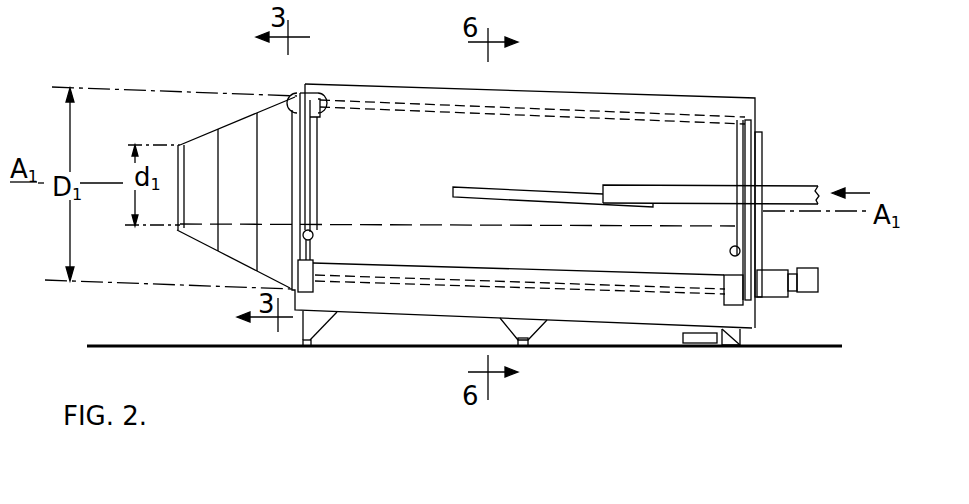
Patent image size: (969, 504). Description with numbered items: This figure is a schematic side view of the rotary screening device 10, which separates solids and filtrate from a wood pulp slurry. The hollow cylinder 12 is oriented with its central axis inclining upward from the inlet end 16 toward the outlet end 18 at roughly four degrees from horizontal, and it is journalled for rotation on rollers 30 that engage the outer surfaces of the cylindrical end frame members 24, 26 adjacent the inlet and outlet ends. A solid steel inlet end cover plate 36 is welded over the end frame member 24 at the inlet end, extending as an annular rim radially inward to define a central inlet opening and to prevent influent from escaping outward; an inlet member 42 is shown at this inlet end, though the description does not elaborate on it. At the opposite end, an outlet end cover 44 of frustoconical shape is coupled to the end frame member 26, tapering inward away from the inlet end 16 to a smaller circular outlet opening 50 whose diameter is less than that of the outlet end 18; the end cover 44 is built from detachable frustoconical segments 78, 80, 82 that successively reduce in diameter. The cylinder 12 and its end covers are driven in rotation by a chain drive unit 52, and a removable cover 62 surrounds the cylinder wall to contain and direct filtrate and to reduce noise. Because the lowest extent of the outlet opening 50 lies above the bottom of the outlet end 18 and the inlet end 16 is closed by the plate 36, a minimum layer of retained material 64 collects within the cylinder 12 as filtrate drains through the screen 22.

The rotary screening device 10 is at (725, 78).
The hollow cylinder 12 is at (582, 108).
The inlet end 16 is at (760, 152).
The outlet end 18 is at (290, 100).
The screen 22 is at (587, 290).
The cylindrical end frame member 24 is at (748, 132).
The cylindrical end frame member 26 is at (318, 97).
The rollers 30 is at (313, 250).
The inlet end cover plate 36 is at (750, 257).
The feed tube 42 is at (803, 193).
The outlet end cover 44 is at (238, 130).
The outlet opening 50 is at (177, 212).
The chain drive unit 52 is at (828, 270).
The removable cover 62 is at (420, 100).
The layer of retained material 64 is at (543, 262).
The frustoconical segment 78 is at (263, 270).
The frustoconical segment 80 is at (233, 242).
The frustoconical segment 82 is at (200, 232).